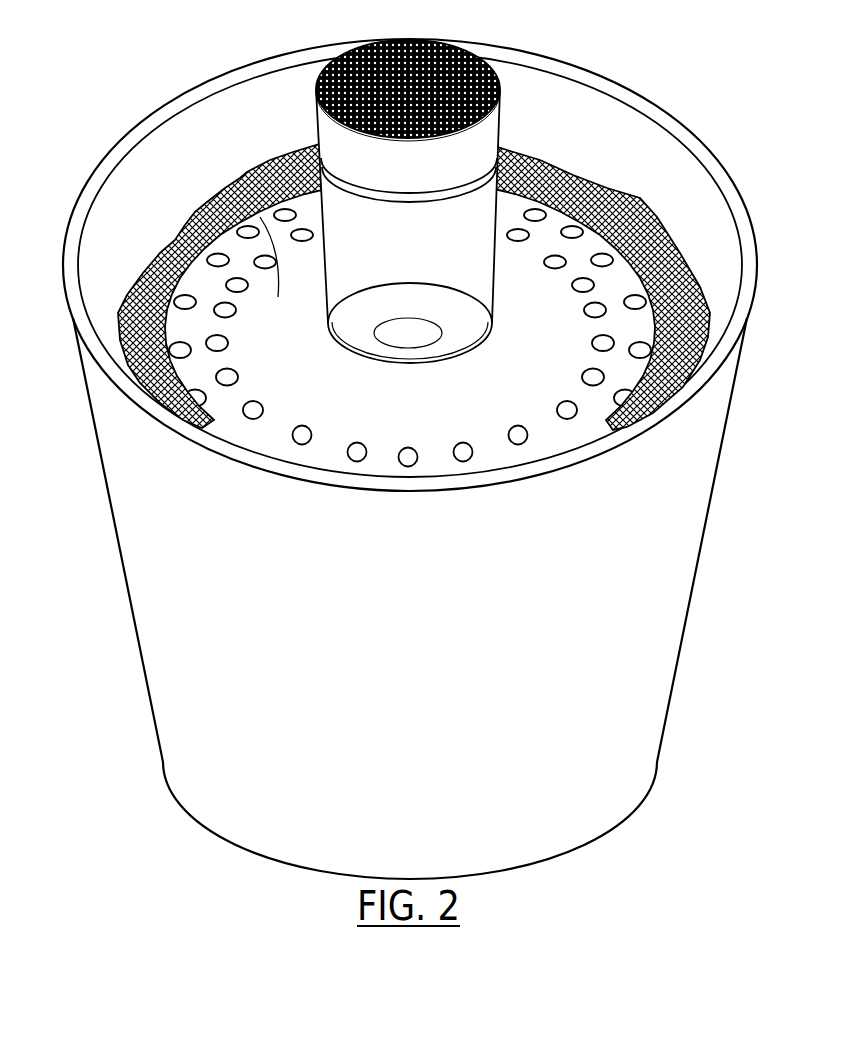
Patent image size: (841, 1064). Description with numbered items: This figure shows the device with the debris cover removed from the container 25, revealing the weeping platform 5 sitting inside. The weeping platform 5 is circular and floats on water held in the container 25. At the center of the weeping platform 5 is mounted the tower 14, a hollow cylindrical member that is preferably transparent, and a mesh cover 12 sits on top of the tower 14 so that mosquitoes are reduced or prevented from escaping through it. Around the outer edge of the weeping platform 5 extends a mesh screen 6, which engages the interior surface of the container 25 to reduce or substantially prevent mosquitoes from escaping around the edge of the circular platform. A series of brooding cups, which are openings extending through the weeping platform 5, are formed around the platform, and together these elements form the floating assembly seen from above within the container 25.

The container 25 is at (122, 470).
The weeping platform 5 is at (414, 305).
The mesh screen 6 is at (642, 240).
The tower 14 is at (485, 192).
The mesh cover 12 is at (432, 40).